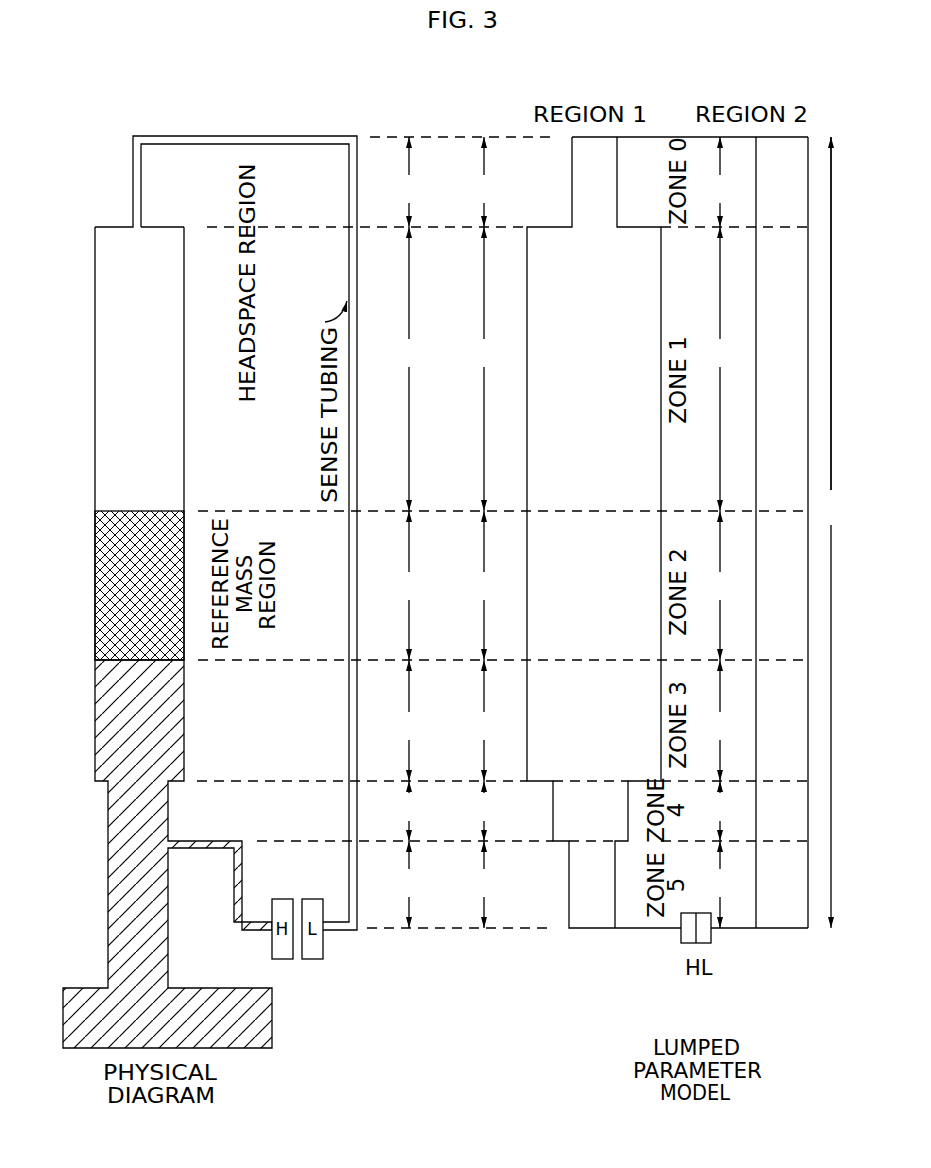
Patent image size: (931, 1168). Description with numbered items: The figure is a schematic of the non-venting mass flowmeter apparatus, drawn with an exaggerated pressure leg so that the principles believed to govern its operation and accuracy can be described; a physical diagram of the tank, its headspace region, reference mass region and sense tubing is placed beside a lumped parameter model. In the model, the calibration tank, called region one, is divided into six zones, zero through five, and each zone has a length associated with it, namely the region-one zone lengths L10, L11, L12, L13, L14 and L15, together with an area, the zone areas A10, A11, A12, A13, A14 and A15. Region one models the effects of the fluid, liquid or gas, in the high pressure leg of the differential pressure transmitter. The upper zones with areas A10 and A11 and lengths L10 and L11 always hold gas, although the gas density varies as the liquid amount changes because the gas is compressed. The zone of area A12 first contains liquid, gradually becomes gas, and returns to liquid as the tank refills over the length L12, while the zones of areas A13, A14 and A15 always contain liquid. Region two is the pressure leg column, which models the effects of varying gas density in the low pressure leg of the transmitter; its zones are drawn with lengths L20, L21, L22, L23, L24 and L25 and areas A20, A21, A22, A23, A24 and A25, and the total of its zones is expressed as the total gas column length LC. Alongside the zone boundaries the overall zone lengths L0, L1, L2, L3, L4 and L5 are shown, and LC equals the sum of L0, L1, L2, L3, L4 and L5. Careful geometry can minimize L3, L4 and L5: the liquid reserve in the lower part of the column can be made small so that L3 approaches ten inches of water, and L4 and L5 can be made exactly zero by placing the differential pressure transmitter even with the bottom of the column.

The zone 0 length L0 is at (407, 182).
The zone 1 length L1 is at (407, 369).
The zone 2 length L2 is at (407, 585).
The zone 3 length L3 is at (407, 720).
The zone 4 length L4 is at (407, 811).
The zone 5 length L5 is at (407, 884).
The region 1 zone 0 length L10 is at (486, 182).
The region 1 zone 1 length L11 is at (486, 369).
The region 1 zone 2 length L12 is at (486, 585).
The region 1 zone 3 length L13 is at (486, 720).
The region 1 zone 4 length L14 is at (486, 811).
The region 1 zone 5 length L15 is at (486, 884).
The region 2 zone 0 length L20 is at (722, 182).
The region 2 zone 1 length L21 is at (722, 369).
The region 2 zone 2 length L22 is at (722, 585).
The region 2 zone 3 length L23 is at (722, 720).
The region 2 zone 4 length L24 is at (722, 811).
The region 2 zone 5 length L25 is at (722, 884).
The total gas column length LC is at (827, 532).
The region 1 zone 0 area A10 is at (590, 189).
The region 1 zone 1 area A11 is at (599, 350).
The region 1 zone 2 area A12 is at (599, 586).
The region 1 zone 3 area A13 is at (599, 726).
The region 1 zone 4 area A14 is at (598, 807).
The region 1 zone 5 area A15 is at (589, 883).
The region 2 zone 0 area A20 is at (781, 189).
The region 2 zone 1 area A21 is at (781, 350).
The region 2 zone 2 area A22 is at (781, 586).
The region 2 zone 3 area A23 is at (781, 726).
The region 2 zone 4 area A24 is at (781, 807).
The region 2 zone 5 area A25 is at (781, 883).